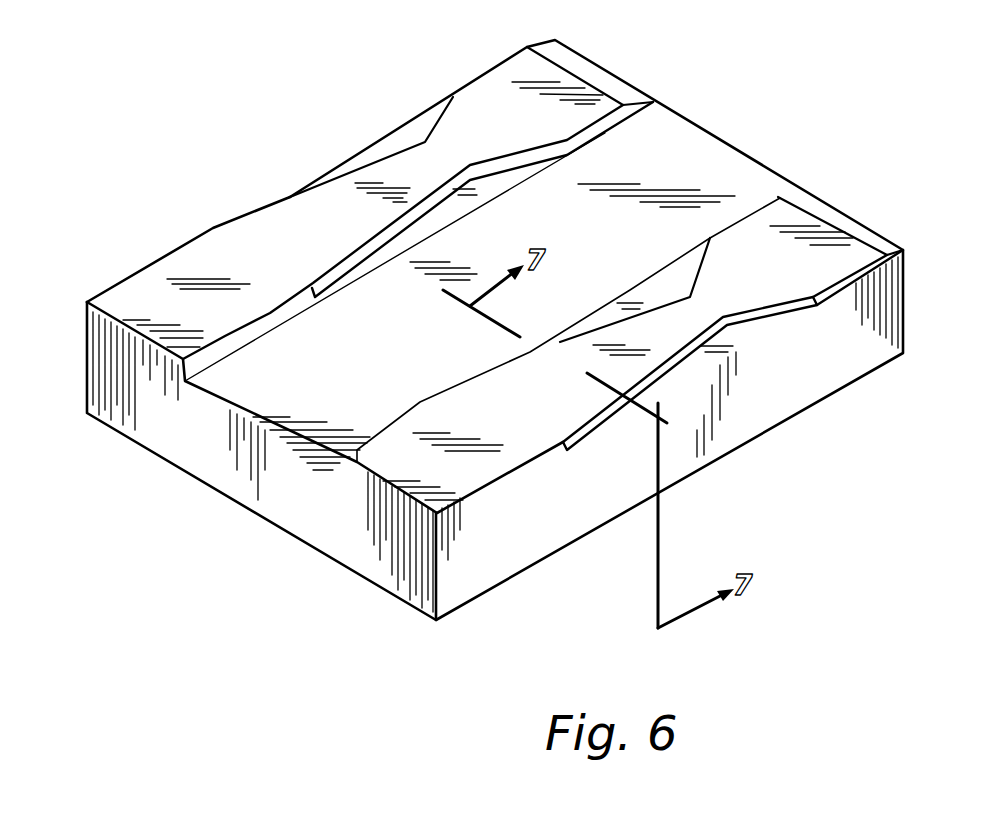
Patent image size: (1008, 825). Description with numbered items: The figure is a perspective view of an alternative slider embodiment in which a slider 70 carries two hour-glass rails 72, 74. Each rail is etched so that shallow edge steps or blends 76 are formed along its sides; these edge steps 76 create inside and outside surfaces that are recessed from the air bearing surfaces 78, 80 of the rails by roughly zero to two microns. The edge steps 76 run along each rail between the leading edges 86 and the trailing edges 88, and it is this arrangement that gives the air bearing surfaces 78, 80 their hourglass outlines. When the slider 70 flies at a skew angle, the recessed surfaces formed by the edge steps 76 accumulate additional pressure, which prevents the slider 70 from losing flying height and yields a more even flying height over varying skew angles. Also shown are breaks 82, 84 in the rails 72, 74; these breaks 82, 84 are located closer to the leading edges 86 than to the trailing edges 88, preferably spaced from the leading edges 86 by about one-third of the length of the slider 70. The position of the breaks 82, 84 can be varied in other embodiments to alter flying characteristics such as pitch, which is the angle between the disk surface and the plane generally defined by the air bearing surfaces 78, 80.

The slider 70 is at (178, 487).
The hour-glass rail 72 is at (123, 343).
The hour-glass rail 74 is at (400, 521).
The edge steps 76 is at (423, 127).
The air bearing surface 78 is at (265, 232).
The air bearing surface 80 is at (457, 407).
The break 82 is at (452, 130).
The break 84 is at (712, 300).
The leading edges 86 is at (833, 187).
The trailing edges 88 is at (362, 470).